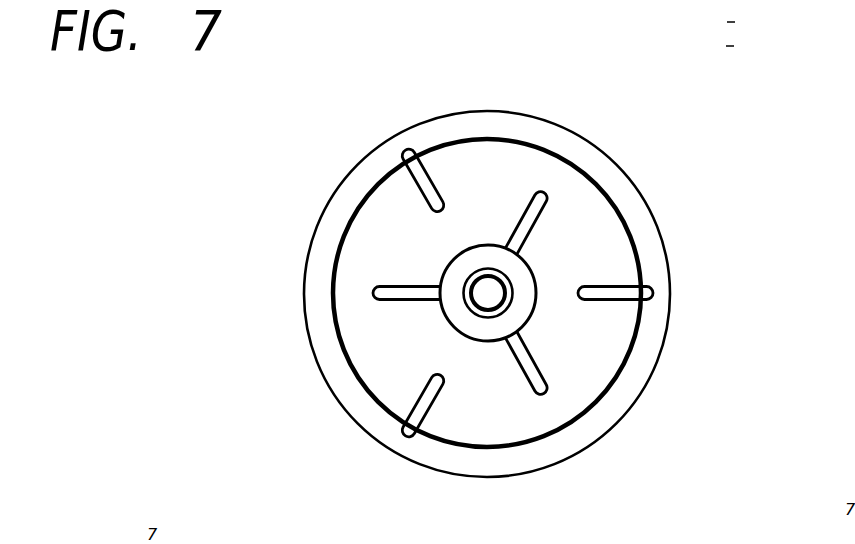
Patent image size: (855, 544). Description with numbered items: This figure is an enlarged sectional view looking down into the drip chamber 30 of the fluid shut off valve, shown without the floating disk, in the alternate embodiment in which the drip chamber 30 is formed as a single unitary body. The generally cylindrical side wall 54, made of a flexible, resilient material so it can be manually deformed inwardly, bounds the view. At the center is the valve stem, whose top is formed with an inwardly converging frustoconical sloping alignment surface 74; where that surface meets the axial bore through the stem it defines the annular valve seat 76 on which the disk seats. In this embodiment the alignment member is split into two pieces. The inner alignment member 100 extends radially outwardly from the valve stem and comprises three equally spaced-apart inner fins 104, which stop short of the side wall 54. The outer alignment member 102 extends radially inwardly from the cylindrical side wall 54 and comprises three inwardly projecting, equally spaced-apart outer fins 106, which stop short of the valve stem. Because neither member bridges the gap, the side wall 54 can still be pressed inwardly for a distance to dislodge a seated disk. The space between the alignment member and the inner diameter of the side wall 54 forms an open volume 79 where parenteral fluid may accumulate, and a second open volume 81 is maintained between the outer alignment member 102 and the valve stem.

The drip chamber 30 is at (477, 281).
The cylindrical side wall 54 is at (306, 292).
The frustoconical sloping alignment surface 74 is at (456, 278).
The annular valve seat 76 is at (510, 291).
The open volume 79 is at (553, 408).
The second open volume 81 is at (448, 363).
The inner alignment member 100 is at (360, 305).
The outer alignment member 102 is at (620, 280).
The inner fins 104 is at (482, 236).
The outer fins 106 is at (560, 293).